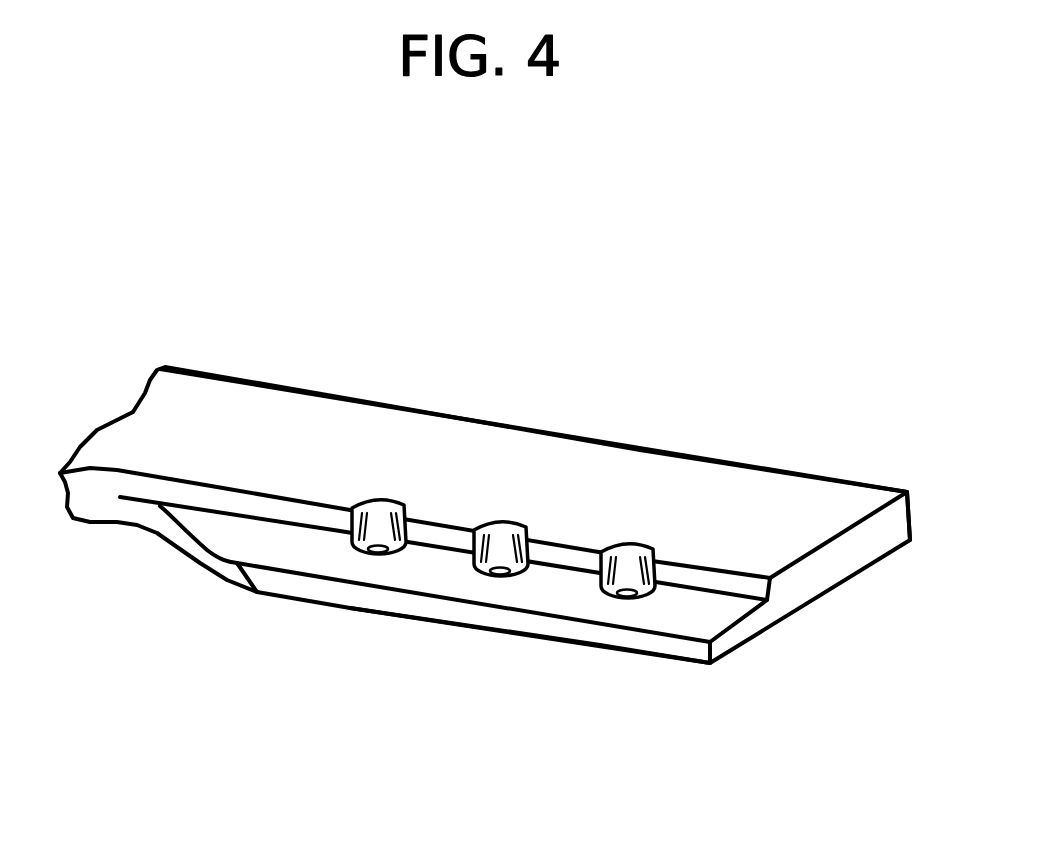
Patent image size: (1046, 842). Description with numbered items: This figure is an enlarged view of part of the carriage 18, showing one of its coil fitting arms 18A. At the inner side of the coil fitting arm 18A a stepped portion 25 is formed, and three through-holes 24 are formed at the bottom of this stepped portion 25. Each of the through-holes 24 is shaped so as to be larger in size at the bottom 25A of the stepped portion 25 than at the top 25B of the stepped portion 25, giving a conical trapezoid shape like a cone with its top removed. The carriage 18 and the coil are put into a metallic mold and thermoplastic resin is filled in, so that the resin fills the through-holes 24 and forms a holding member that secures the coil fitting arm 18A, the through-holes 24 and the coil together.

The carriage 18 is at (235, 365).
The coil fitting arm 18A is at (803, 508).
The through-holes 24 is at (380, 498).
The stepped portion 25 is at (667, 670).
The bottom of stepped portion 25A is at (423, 618).
The top of stepped portion 25B is at (682, 608).